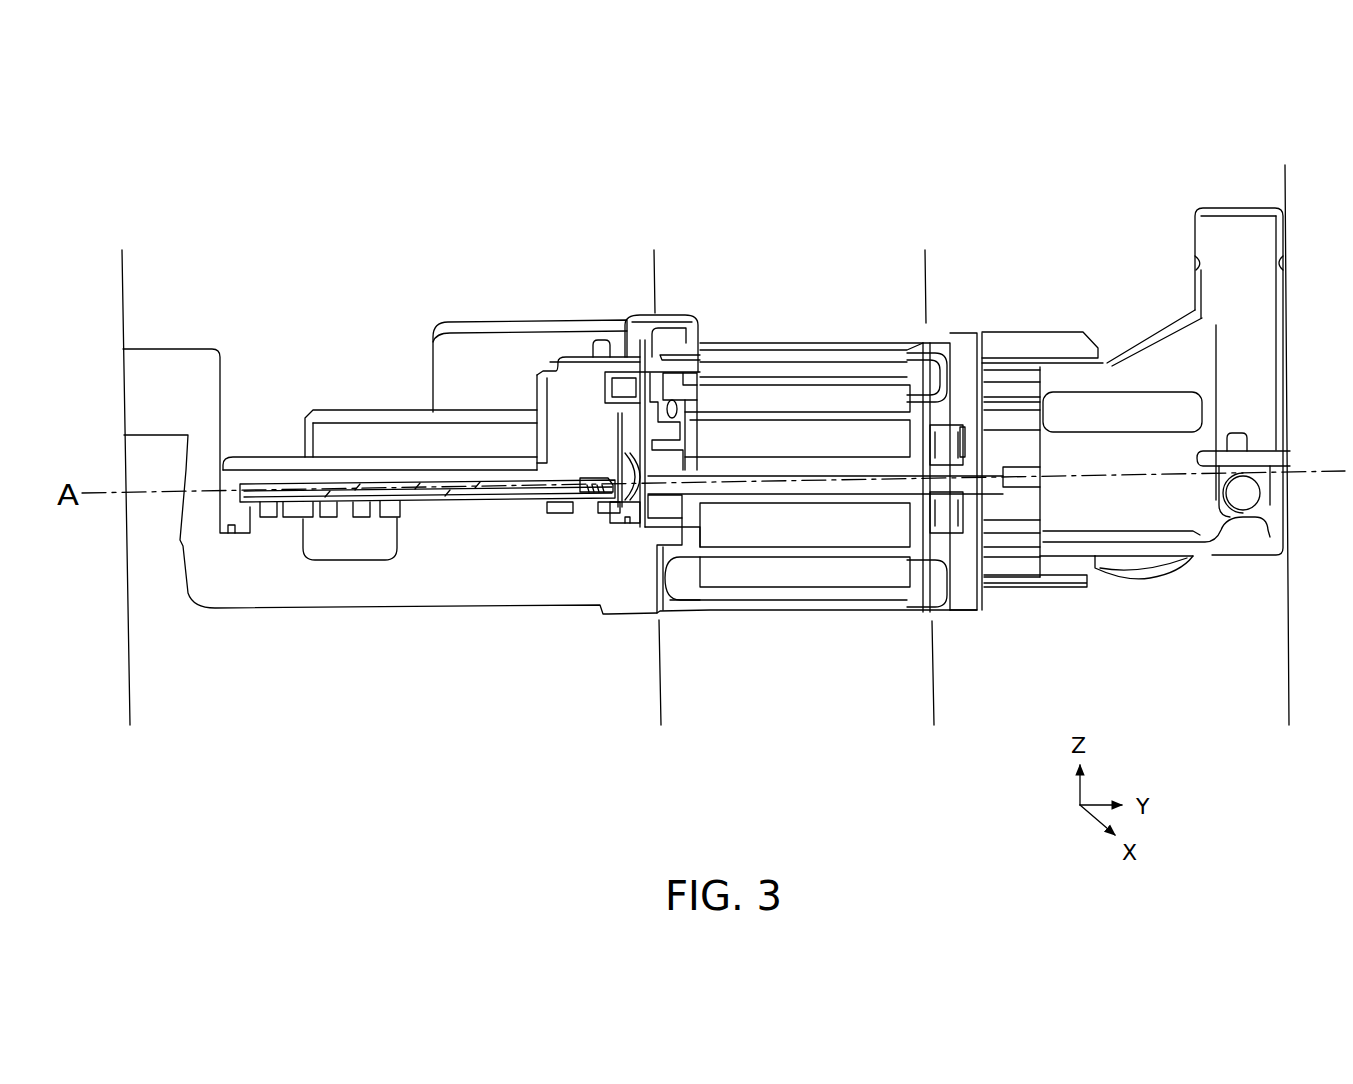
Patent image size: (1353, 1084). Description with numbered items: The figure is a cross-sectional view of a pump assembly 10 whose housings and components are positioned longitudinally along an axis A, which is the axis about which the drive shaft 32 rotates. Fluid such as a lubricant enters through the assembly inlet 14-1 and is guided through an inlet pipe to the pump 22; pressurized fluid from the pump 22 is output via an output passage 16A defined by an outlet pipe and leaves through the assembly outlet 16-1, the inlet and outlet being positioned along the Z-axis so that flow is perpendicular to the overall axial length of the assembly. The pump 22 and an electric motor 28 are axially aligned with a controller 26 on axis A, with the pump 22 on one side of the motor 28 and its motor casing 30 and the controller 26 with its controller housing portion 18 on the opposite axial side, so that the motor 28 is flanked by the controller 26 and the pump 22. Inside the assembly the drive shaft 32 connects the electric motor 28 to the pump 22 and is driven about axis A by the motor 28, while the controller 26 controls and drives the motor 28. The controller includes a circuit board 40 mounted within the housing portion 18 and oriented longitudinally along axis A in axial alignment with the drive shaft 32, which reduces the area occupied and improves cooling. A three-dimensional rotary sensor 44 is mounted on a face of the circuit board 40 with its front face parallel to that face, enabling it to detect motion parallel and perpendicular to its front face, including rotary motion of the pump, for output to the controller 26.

The pump assembly 10 is at (312, 158).
The assembly inlet 14-1 is at (1140, 574).
The assembly outlet 16-1 is at (1230, 206).
The output passage 16A is at (1206, 537).
The controller housing portion 18 is at (321, 396).
The pump 22 is at (1018, 602).
The controller 26 is at (432, 515).
The electric motor 28 is at (738, 622).
The motor casing 30 is at (807, 342).
The drive shaft 32 is at (935, 484).
The circuit board 40 is at (508, 497).
The 3D rotary sensor 44 is at (590, 477).